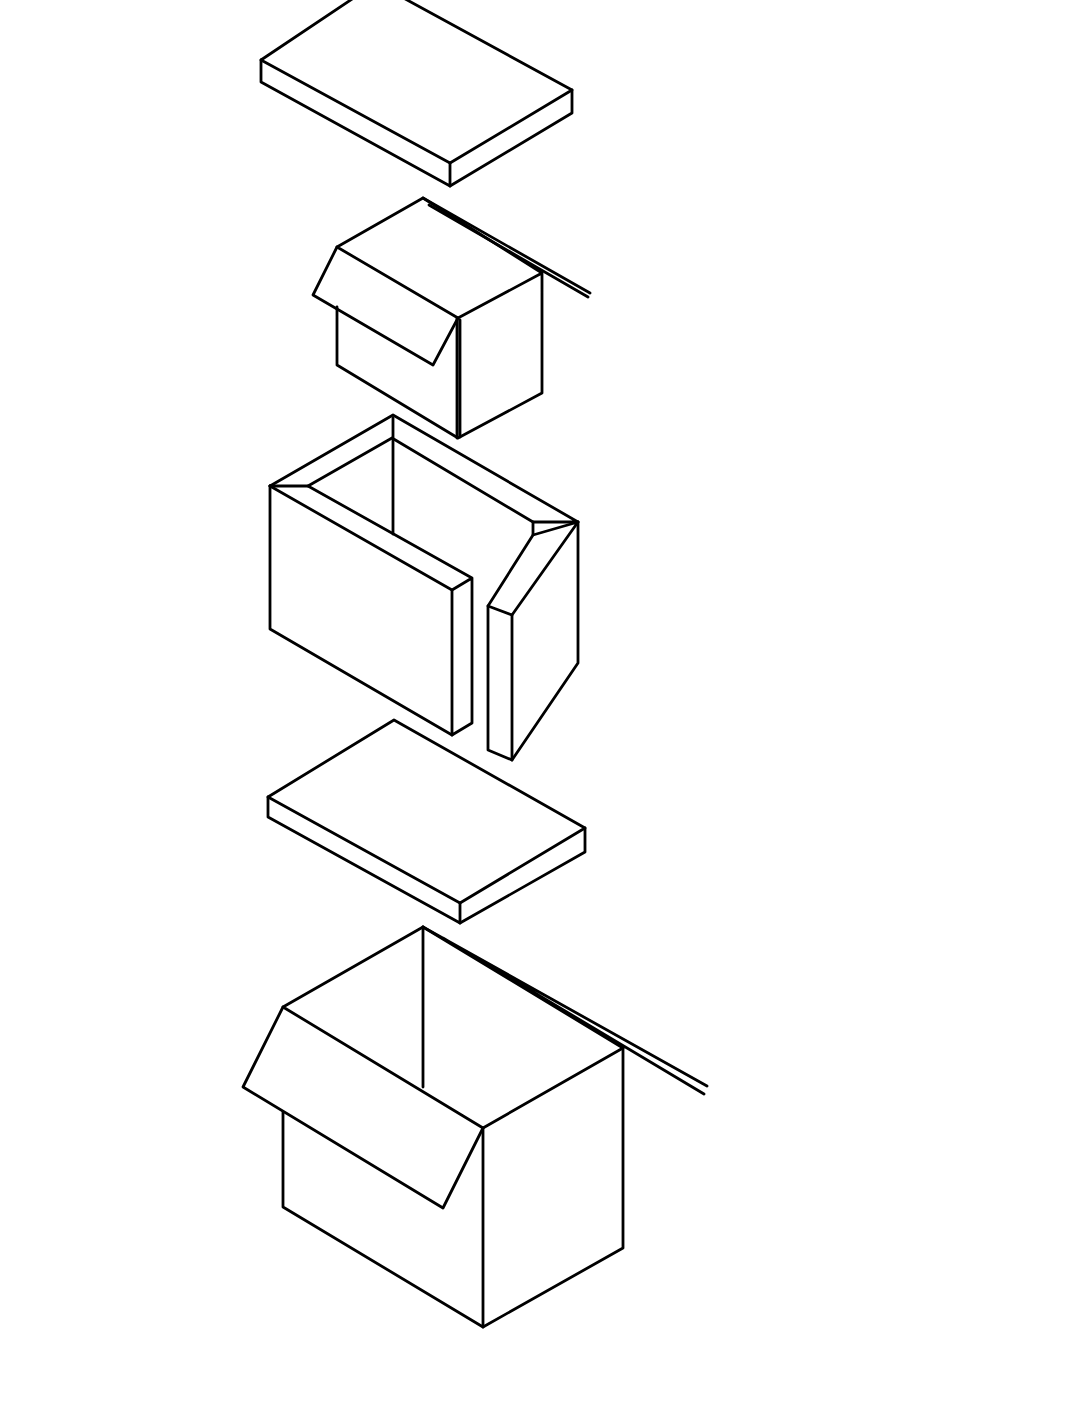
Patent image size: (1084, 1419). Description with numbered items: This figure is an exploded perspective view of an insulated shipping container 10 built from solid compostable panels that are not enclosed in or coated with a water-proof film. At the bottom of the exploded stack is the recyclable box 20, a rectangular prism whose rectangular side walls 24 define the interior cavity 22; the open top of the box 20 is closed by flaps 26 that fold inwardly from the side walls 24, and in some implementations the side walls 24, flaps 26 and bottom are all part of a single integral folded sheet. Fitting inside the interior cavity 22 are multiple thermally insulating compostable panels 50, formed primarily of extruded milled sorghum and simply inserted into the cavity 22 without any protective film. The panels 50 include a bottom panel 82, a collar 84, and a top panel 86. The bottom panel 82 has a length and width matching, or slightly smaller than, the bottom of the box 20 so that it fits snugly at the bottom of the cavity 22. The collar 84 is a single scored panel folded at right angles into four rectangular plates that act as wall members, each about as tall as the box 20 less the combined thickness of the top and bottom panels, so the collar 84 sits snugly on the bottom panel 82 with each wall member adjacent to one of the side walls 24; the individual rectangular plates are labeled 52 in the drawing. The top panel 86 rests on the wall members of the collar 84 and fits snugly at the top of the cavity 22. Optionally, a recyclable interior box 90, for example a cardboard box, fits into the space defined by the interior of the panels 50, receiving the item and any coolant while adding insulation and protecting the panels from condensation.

The insulated shipping container 10 is at (823, 2).
The box 20 is at (420, 1127).
The interior cavity 22 is at (375, 1012).
The side walls 24 is at (343, 1220).
The flaps 26 is at (295, 1062).
The thermally insulating compostable panels 50 is at (728, 8).
The insulating panels 52 is at (333, 457).
The bottom panel 82 is at (538, 872).
The collar 84 is at (398, 572).
The top panel 86 is at (517, 150).
The interior box 90 is at (320, 242).